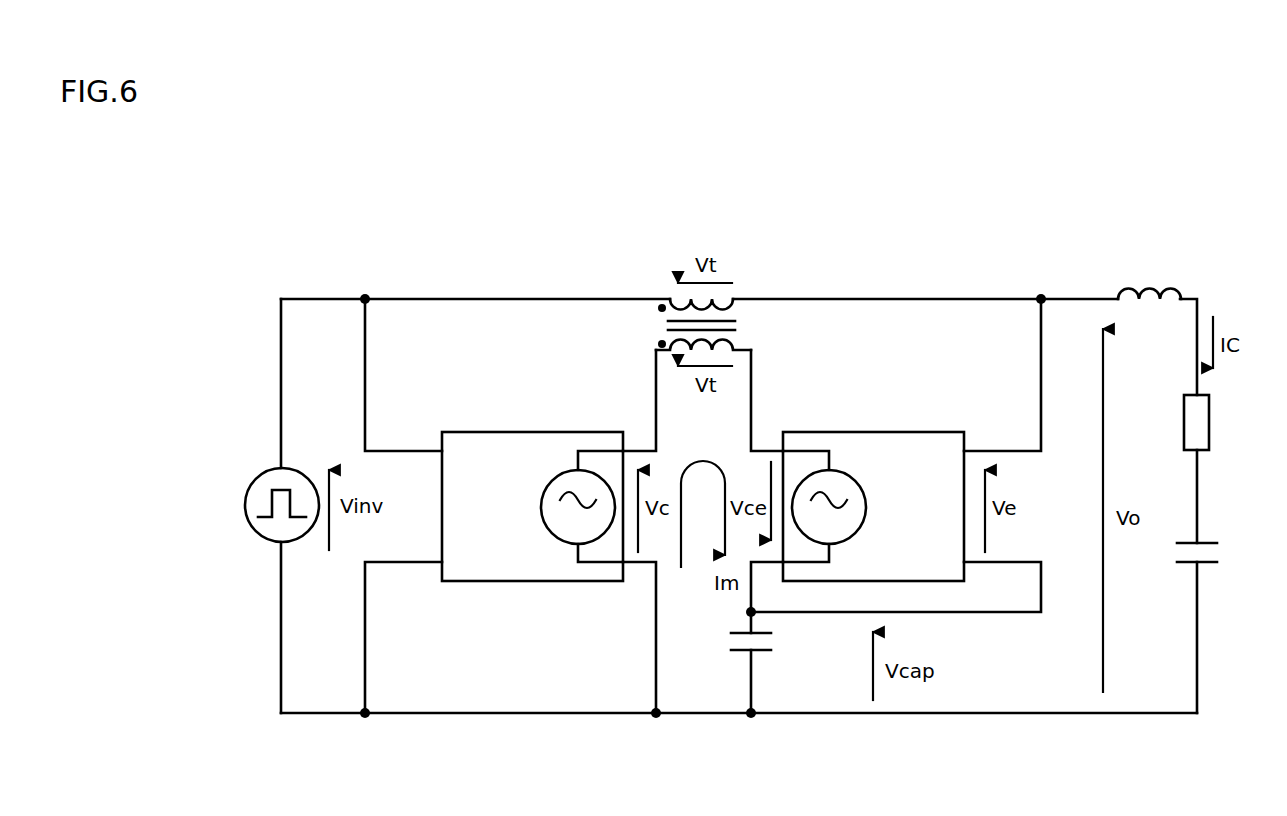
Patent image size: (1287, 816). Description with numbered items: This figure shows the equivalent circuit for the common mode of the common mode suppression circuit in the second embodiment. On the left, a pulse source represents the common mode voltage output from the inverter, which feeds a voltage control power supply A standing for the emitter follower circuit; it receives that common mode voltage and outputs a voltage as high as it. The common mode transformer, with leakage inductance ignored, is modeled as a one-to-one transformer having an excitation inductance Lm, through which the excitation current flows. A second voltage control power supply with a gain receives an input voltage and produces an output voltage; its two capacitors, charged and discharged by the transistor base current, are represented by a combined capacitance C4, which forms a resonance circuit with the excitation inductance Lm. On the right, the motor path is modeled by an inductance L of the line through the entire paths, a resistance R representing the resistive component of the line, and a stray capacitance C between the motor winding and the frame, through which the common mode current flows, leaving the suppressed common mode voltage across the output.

The voltage control power supply A is at (493, 430).
The excitation inductance Lm is at (682, 333).
The inductance L is at (1149, 276).
The resistance R is at (1209, 410).
The capacitance C is at (1207, 555).
The combined capacitance C4 is at (735, 658).